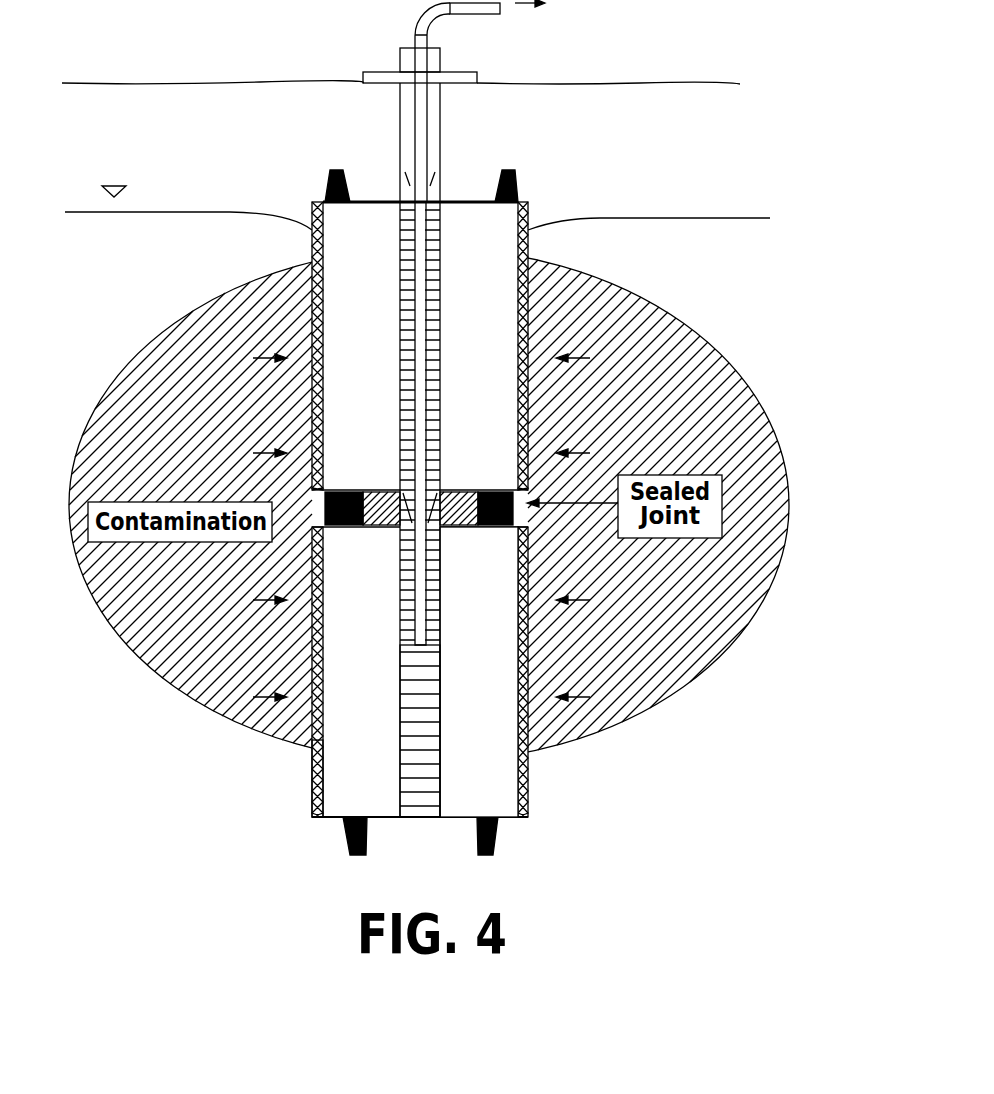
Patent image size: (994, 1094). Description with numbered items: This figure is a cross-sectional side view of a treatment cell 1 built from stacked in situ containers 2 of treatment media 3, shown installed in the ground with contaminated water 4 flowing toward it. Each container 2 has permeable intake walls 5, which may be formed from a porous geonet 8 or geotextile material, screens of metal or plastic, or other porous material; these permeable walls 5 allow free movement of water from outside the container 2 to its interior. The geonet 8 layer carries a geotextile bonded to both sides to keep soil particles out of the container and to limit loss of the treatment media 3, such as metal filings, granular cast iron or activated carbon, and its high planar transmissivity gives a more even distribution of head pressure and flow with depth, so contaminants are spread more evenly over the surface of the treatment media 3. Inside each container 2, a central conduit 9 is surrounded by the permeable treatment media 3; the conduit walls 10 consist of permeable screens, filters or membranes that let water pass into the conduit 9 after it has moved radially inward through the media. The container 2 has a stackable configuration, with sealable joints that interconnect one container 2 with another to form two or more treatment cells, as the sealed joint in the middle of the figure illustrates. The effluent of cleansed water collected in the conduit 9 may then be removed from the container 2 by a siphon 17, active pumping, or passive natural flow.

The treatment cell 1 is at (545, 238).
The container 2 is at (318, 202).
The treatment media 3 is at (482, 775).
The water 4 is at (720, 360).
The permeable intake walls 5 is at (300, 776).
The geonet 8 is at (313, 763).
The central conduit 9 is at (427, 740).
The conduit walls 10 is at (452, 261).
The siphon 17 is at (519, 20).